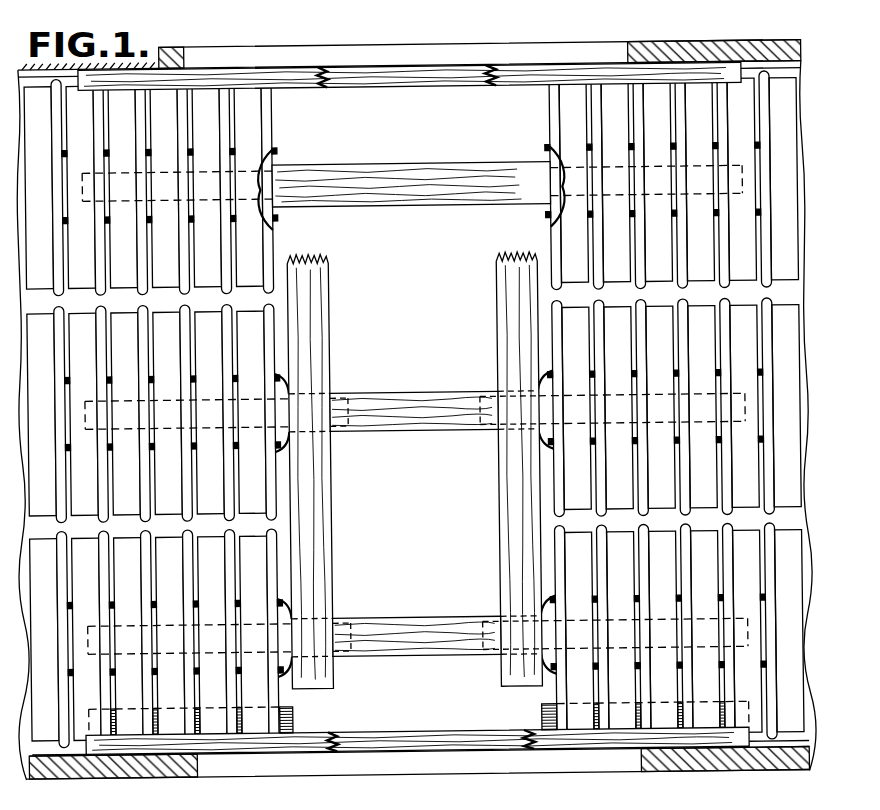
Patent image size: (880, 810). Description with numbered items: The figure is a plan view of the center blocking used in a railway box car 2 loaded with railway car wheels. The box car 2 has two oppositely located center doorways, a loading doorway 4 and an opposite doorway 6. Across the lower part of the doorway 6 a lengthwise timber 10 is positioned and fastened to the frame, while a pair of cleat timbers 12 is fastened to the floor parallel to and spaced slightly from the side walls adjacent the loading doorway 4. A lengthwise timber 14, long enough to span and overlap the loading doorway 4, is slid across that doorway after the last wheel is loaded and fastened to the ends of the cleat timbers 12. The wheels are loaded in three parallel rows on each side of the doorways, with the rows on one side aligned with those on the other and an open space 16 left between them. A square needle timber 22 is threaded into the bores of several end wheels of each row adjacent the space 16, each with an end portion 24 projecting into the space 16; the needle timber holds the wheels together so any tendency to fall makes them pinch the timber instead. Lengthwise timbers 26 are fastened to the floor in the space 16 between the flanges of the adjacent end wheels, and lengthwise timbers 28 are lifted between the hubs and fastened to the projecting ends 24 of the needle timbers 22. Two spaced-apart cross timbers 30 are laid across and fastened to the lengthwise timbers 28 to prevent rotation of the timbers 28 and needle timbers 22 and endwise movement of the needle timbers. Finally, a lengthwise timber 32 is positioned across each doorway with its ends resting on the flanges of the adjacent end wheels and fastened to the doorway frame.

The railway box car 2 is at (142, 777).
The loading doorway 4 is at (418, 767).
The doorway 6 is at (453, 58).
The lengthwise timber 10 is at (386, 76).
The cleat timbers 12 is at (290, 718).
The lengthwise timber 14 is at (424, 703).
The open space 16 is at (430, 362).
The square needle timber 22 is at (171, 428).
The end portion 24 is at (340, 428).
The lengthwise timbers 26 is at (440, 198).
The lengthwise timbers 28 is at (428, 432).
The cross timbers 30 is at (331, 517).
The lengthwise timber 32 is at (283, 80).